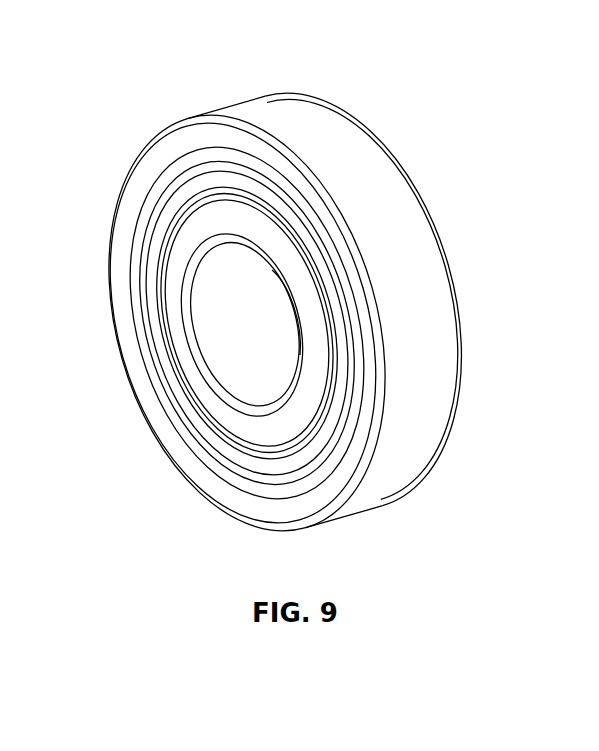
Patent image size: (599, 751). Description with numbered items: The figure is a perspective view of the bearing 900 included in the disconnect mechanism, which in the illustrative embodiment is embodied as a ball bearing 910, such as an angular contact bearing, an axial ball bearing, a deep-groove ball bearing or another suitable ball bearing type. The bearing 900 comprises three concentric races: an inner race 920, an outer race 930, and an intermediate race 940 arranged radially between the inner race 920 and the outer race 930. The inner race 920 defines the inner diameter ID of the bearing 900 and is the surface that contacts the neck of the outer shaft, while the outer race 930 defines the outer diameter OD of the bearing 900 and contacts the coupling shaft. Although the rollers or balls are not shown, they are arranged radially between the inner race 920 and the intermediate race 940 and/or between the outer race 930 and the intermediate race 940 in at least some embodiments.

The bearing 900 is at (168, 50).
The ball bearing 910 is at (400, 268).
The inner race 920 is at (239, 419).
The outer race 930 is at (282, 180).
The intermediate race 940 is at (162, 225).
The outer diameter OD is at (330, 217).
The inner diameter ID is at (207, 355).